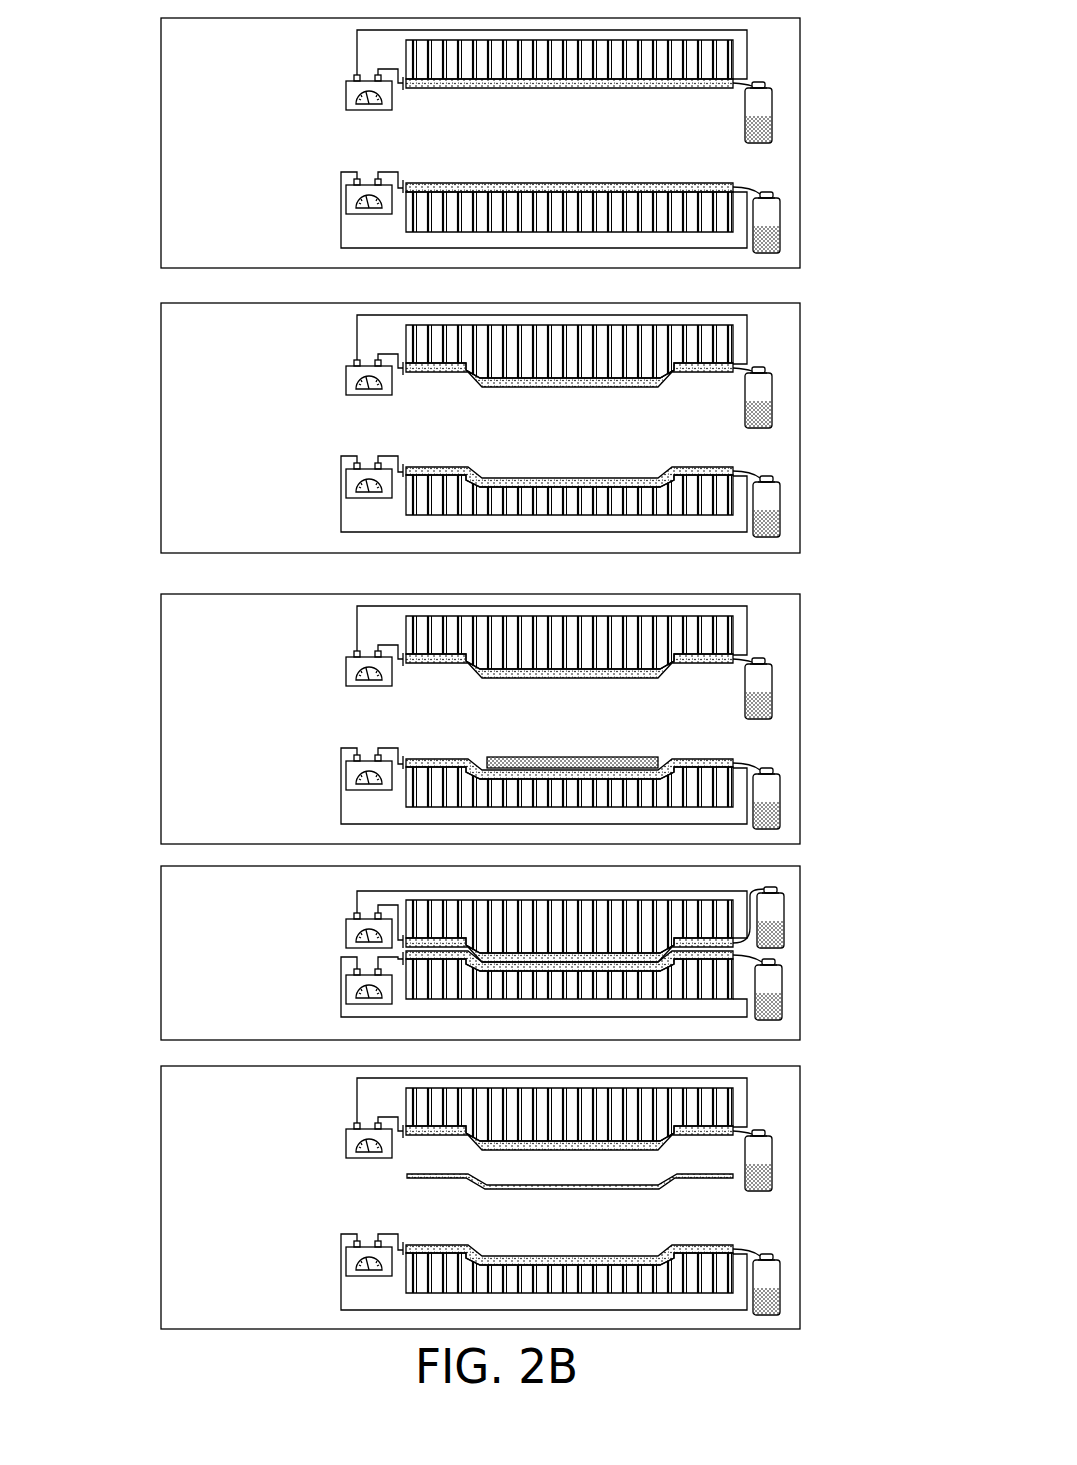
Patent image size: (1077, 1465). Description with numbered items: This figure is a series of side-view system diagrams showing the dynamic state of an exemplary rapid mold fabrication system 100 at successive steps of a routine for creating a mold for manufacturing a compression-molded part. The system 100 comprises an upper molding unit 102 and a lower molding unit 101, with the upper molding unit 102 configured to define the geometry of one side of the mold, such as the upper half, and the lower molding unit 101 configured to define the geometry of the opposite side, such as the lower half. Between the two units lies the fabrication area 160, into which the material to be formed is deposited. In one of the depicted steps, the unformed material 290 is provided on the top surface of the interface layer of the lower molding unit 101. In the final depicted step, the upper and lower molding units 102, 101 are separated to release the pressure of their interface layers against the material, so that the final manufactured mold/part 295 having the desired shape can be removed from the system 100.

The rapid mold fabrication system 100 is at (417, 673).
The lower molding unit 101 is at (627, 726).
The upper molding unit 102 is at (630, 601).
The fabrication area 160 is at (381, 660).
The unformed material 290 is at (590, 757).
The final manufactured mold/part 295 is at (572, 1189).